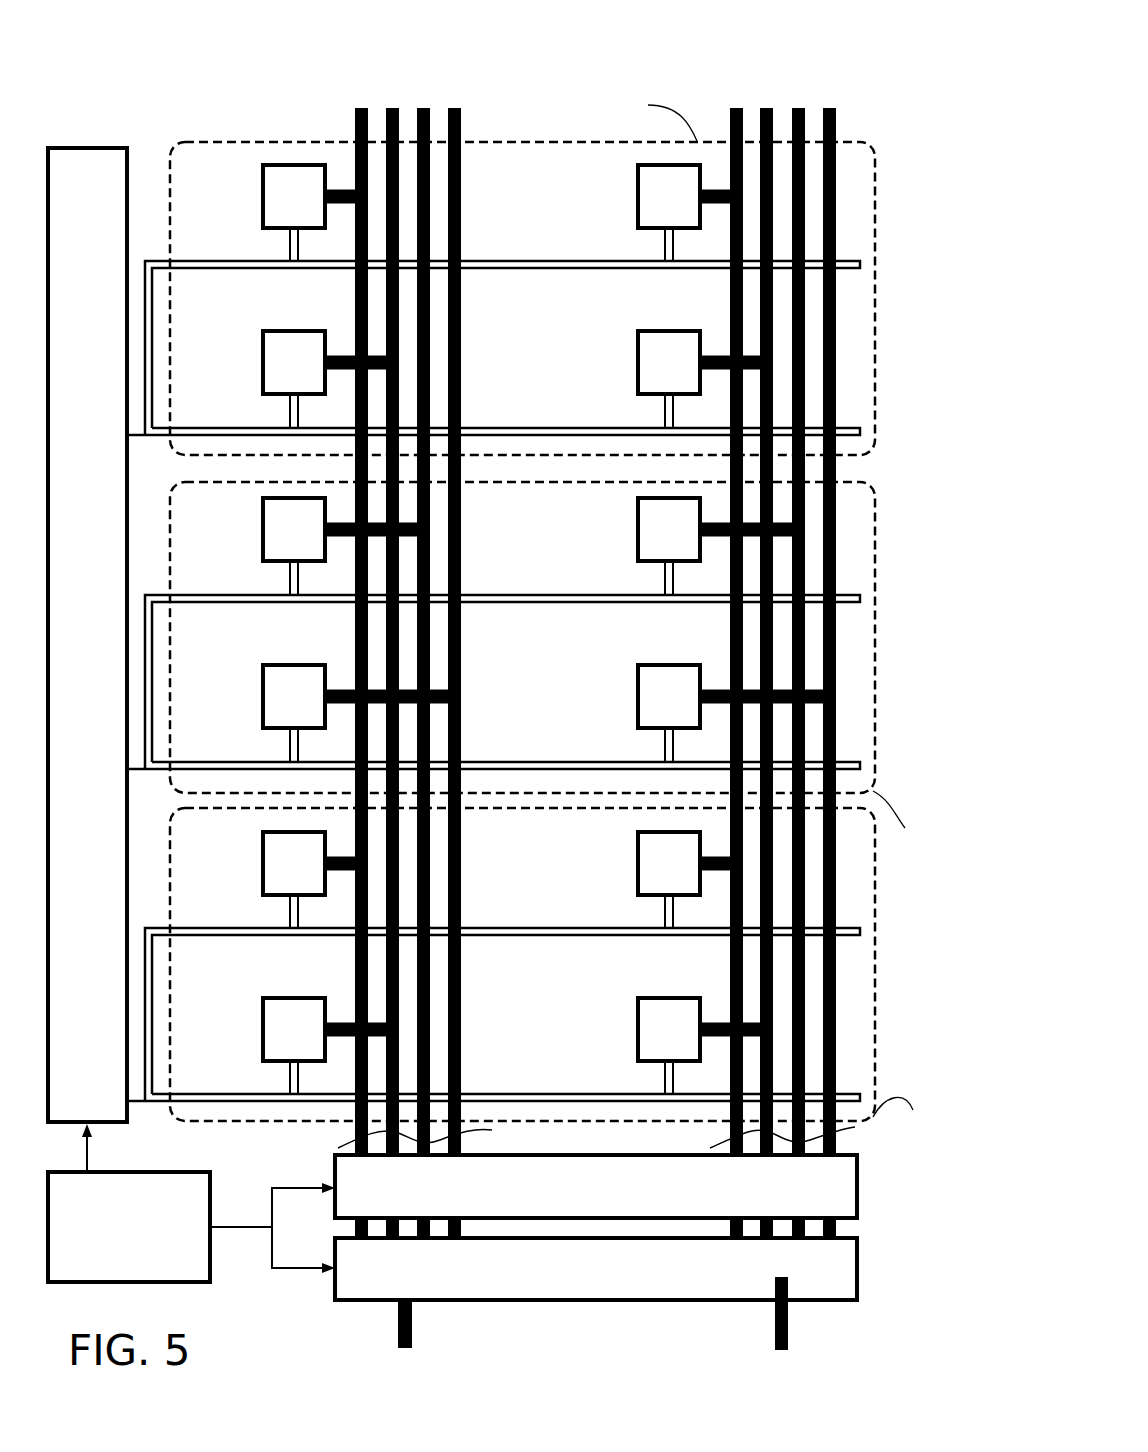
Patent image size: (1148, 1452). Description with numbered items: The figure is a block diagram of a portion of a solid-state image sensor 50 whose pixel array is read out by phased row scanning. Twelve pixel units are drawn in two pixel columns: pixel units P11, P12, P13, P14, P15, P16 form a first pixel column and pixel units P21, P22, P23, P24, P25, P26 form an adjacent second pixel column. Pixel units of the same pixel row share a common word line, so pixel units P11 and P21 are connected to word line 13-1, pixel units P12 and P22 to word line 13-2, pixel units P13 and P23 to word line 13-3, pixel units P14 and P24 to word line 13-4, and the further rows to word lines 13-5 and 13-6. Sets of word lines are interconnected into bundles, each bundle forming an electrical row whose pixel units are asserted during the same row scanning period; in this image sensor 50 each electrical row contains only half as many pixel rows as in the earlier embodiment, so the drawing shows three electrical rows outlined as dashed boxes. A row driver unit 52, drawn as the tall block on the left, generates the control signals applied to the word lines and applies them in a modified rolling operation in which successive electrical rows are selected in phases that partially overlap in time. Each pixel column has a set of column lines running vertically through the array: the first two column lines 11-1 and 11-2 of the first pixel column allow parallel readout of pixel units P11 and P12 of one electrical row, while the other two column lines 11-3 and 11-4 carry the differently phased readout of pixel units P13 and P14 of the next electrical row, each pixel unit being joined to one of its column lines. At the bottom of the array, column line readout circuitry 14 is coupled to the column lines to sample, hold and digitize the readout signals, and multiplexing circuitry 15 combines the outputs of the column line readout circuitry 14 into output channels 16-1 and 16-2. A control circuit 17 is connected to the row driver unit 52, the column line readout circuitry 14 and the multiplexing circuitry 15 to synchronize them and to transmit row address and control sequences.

The solid-state image sensor 50 is at (880, 58).
The row driver unit 52 is at (88, 146).
The column line 11-1 is at (355, 128).
The column line 11-2 is at (386, 110).
The column line 11-3 is at (421, 108).
The column line 11-4 is at (461, 160).
The word line 13-1 is at (508, 270).
The word line 13-2 is at (520, 427).
The word line 13-3 is at (508, 603).
The word line 13-4 is at (520, 761).
The word line 13-5 is at (505, 936).
The word line 13-6 is at (520, 1092).
The column line readout circuitry 14 is at (613, 1202).
The multiplexing circuitry 15 is at (613, 1285).
The output channel 16-1 is at (397, 1313).
The output channel 16-2 is at (775, 1312).
The control circuit 17 is at (145, 1248).
The pixel unit P11 is at (263, 205).
The pixel unit P12 is at (263, 371).
The pixel unit P13 is at (263, 538).
The pixel unit P14 is at (263, 705).
The pixel unit P15 is at (263, 872).
The pixel unit P16 is at (263, 1038).
The pixel unit P21 is at (638, 205).
The pixel unit P22 is at (638, 371).
The pixel unit P23 is at (638, 538).
The pixel unit P24 is at (638, 705).
The pixel unit P25 is at (638, 872).
The pixel unit P26 is at (638, 1038).